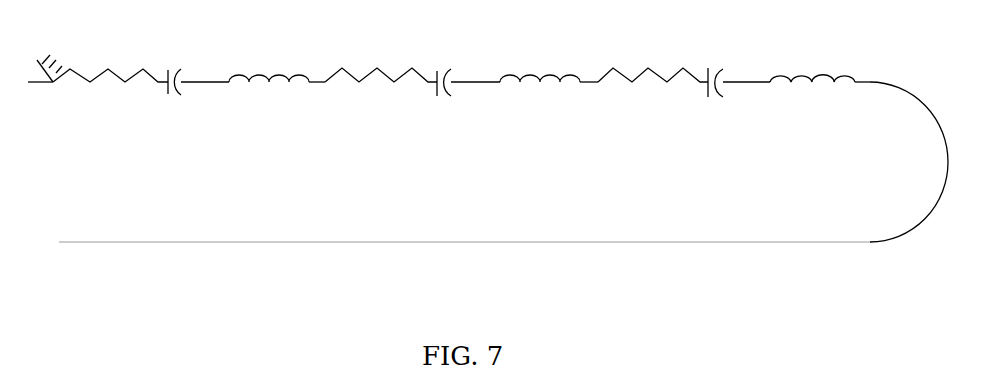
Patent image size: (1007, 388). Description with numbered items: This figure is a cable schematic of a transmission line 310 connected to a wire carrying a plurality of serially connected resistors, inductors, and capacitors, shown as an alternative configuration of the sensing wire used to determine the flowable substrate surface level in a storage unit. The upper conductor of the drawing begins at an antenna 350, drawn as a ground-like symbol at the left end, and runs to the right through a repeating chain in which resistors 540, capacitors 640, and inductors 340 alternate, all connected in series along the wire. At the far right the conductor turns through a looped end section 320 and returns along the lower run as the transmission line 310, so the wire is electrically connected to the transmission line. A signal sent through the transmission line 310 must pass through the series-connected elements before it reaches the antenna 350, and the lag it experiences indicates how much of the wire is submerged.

The transmission line 310 is at (330, 243).
The loop end section 320 is at (946, 160).
The inductors 340 is at (285, 74).
The antenna 350 is at (55, 86).
The resistors 540 is at (144, 68).
The capacitors 640 is at (178, 94).